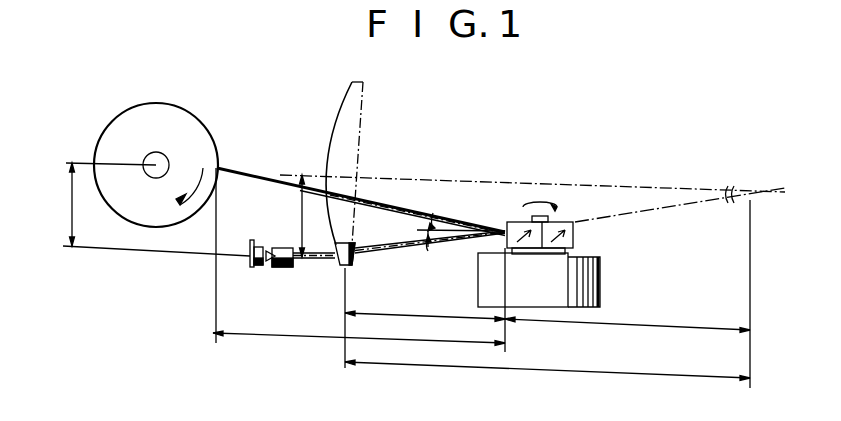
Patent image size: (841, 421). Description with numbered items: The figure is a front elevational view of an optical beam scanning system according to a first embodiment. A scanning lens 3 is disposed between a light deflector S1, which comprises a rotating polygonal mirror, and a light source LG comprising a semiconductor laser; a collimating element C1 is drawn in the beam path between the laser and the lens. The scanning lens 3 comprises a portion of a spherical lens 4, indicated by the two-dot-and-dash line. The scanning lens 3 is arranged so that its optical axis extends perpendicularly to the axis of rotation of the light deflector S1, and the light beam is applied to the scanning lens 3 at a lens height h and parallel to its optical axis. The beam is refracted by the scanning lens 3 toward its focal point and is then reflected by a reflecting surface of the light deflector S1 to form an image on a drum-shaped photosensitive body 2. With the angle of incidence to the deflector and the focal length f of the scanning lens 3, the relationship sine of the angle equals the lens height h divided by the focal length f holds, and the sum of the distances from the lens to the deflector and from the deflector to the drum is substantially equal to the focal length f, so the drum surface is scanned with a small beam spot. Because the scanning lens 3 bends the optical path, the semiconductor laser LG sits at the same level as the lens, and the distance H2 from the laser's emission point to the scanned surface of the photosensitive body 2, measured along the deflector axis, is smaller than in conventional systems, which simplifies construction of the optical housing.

The photosensitive body 2 is at (198, 117).
The scanning lens 3 is at (357, 248).
The spherical lens 4 is at (357, 146).
The collimator C1 is at (283, 247).
The light source LG is at (254, 267).
The light deflector S1 is at (593, 240).
The distance H2 is at (68, 204).
The lens height h is at (304, 213).
The focal length f is at (589, 368).